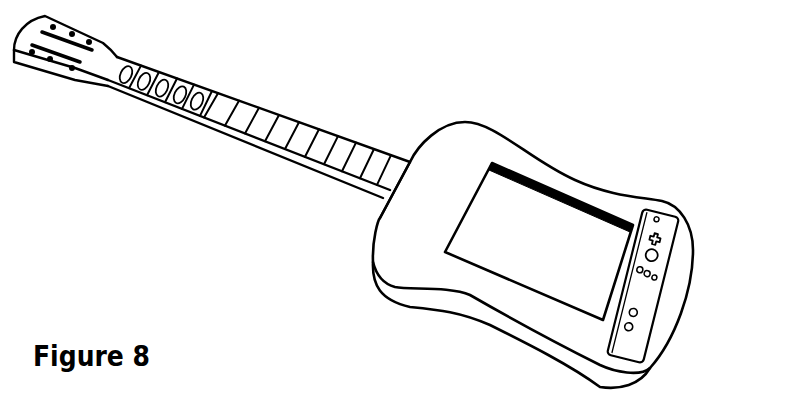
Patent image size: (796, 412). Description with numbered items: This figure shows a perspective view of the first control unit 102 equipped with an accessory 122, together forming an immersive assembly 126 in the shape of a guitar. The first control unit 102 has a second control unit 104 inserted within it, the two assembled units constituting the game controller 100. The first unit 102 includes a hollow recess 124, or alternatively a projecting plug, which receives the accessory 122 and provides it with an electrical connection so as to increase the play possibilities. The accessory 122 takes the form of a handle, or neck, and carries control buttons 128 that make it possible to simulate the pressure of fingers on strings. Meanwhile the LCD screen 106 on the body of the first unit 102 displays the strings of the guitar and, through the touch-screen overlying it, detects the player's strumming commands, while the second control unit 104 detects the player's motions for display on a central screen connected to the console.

The game controller 100 is at (597, 167).
The first control unit 102 is at (470, 150).
The second control unit 104 is at (643, 295).
The LCD screen 106 is at (568, 250).
The accessory 122 is at (288, 138).
The hollow recess 124 is at (406, 160).
The immersive assembly 126 is at (280, 217).
The control buttons 128 is at (173, 105).